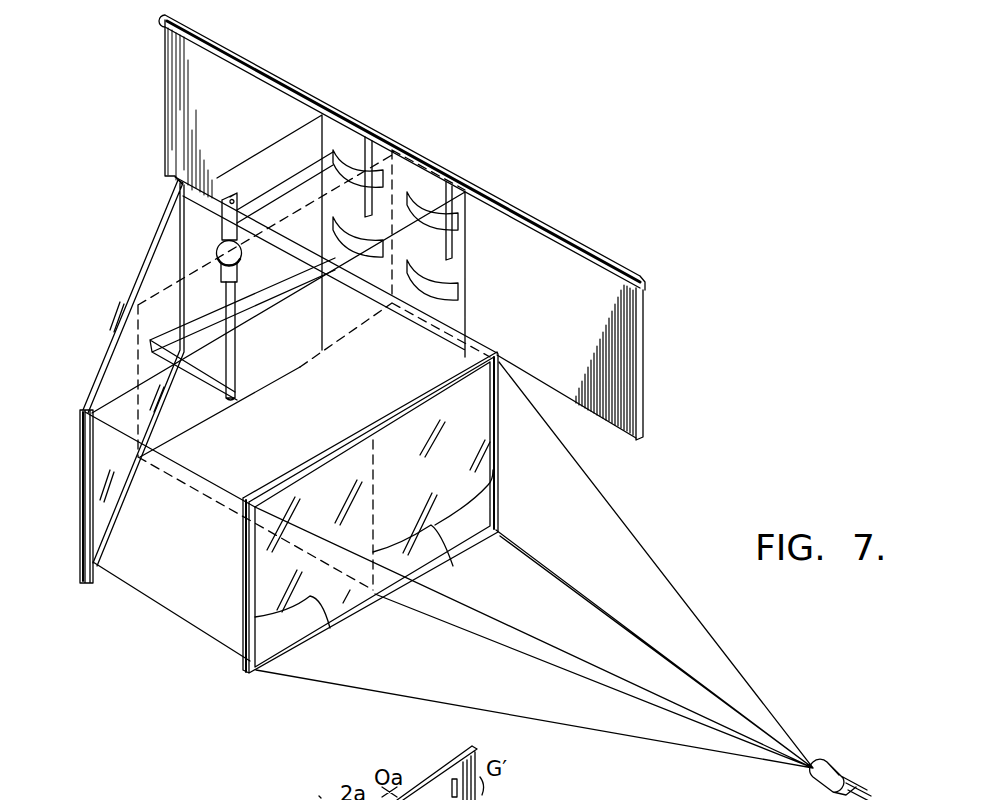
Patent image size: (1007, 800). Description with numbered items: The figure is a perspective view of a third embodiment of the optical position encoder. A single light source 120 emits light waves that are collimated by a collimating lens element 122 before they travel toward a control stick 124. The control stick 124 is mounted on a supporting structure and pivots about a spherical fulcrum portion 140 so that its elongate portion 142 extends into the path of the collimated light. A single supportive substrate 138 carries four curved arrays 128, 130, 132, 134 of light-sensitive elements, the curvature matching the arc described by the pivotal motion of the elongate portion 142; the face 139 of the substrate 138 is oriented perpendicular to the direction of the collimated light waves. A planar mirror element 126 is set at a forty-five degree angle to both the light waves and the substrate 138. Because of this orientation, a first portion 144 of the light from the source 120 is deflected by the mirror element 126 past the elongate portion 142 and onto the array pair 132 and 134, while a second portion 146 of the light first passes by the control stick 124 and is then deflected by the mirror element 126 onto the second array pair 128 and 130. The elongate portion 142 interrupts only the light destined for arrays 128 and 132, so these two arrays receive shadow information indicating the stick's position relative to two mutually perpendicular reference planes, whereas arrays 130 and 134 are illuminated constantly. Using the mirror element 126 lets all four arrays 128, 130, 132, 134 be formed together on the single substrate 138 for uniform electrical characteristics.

The light source 120 is at (825, 762).
The collimating lens element 122 is at (247, 662).
The control stick 124 is at (237, 197).
The planar mirror element 126 is at (83, 418).
The light-sensitive array 128 is at (336, 150).
The light-sensitive array 130 is at (333, 225).
The light-sensitive array 132 is at (462, 205).
The light-sensitive array 134 is at (457, 268).
The supportive substrate 138 is at (645, 356).
The face of the substrate 139 is at (589, 290).
The spherical fulcrum portion 140 is at (214, 247).
The elongate portion 142 is at (237, 337).
The first portion of the light 144 is at (330, 628).
The second portion of the light 146 is at (453, 566).